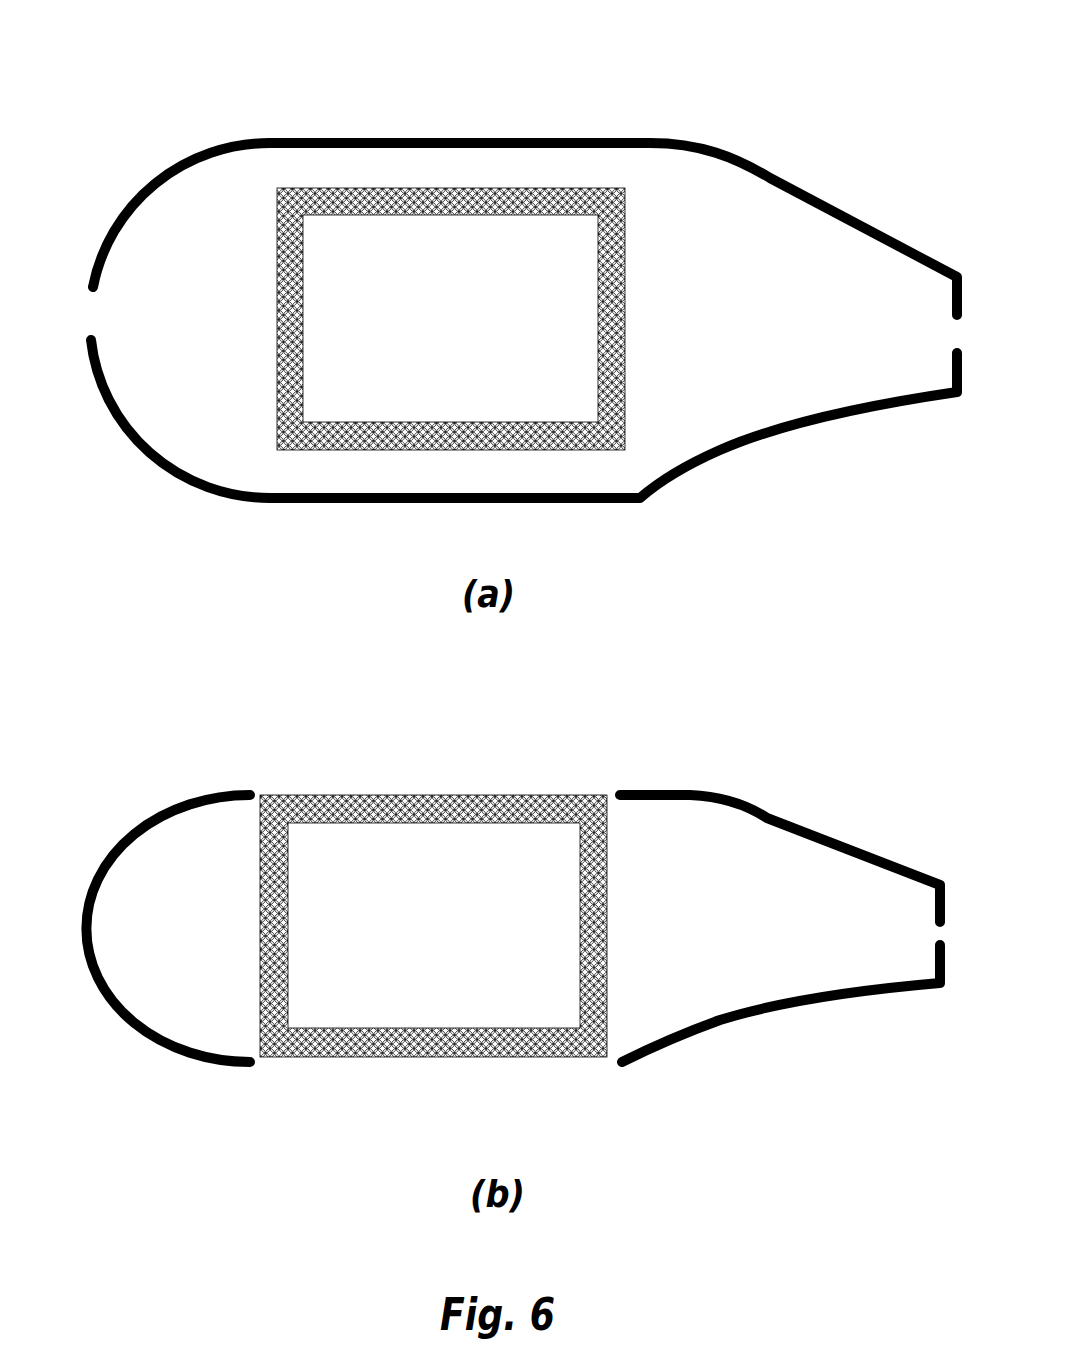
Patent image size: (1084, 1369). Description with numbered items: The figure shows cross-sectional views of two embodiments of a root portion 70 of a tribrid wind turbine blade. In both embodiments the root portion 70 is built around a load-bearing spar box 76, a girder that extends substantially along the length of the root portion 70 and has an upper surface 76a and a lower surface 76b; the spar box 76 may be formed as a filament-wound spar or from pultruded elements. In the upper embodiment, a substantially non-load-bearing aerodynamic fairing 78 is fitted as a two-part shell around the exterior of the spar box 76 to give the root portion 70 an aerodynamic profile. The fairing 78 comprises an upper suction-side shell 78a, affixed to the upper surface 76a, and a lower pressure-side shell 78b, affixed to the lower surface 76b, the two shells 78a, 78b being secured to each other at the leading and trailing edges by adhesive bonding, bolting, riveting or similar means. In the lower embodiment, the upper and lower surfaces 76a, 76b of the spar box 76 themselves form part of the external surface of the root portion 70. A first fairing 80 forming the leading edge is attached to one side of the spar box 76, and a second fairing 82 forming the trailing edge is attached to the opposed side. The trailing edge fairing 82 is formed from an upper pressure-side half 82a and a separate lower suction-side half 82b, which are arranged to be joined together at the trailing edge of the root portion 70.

The root portion 70 is at (123, 92).
The spar box 76 is at (545, 190).
The upper surface 76a is at (350, 186).
The lower surface 76b is at (370, 452).
The fairing 78 is at (867, 155).
The upper suction-side shell 78a is at (740, 158).
The lower pressure-side shell 78b is at (750, 445).
The first fairing 80 is at (118, 1017).
The second fairing 82 is at (765, 1067).
The upper pressure-side half 82a is at (843, 840).
The lower suction-side half 82b is at (870, 990).